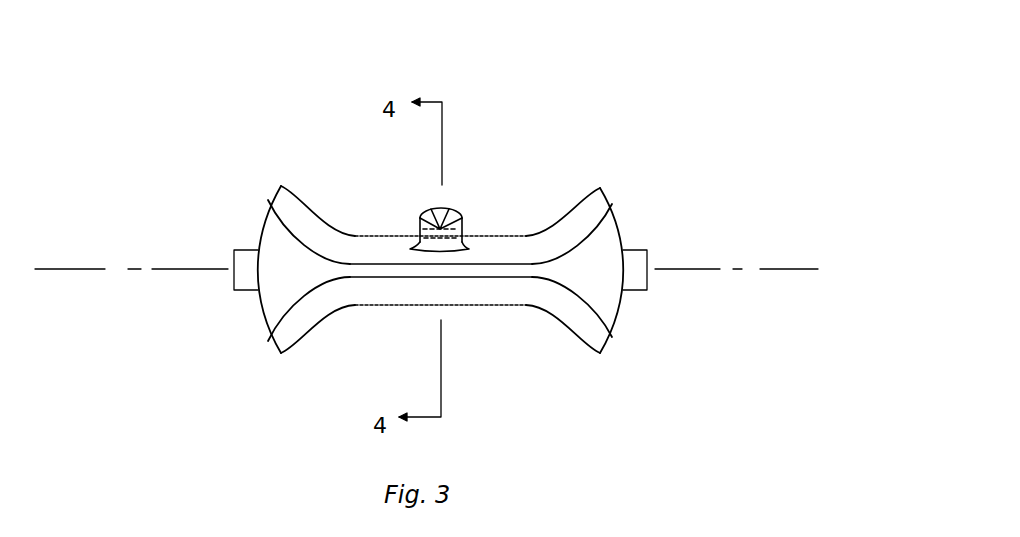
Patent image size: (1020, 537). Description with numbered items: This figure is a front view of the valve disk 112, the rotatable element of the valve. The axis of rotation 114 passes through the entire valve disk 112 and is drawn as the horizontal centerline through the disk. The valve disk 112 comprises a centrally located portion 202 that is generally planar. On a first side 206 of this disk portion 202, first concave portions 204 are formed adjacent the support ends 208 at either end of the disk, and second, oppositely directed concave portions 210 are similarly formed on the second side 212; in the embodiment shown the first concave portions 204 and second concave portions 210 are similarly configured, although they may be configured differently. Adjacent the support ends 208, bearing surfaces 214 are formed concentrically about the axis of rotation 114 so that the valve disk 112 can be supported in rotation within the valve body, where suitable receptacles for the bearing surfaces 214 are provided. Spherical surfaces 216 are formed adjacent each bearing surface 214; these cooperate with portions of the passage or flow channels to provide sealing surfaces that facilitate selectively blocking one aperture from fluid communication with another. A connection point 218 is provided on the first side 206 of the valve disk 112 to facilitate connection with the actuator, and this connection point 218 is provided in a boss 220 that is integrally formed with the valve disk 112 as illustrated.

The valve disk 112 is at (693, 133).
The axis of rotation 114 is at (797, 275).
The centrally located portion 202 is at (494, 235).
The first concave portions 204 is at (303, 190).
The first side 206 is at (478, 152).
The support ends 208 is at (248, 318).
The second concave portions 210 is at (303, 348).
The second side 212 is at (497, 398).
The bearing surfaces 214 is at (240, 246).
The spherical surfaces 216 is at (265, 207).
The connection point 218 is at (414, 219).
The boss 220 is at (463, 207).